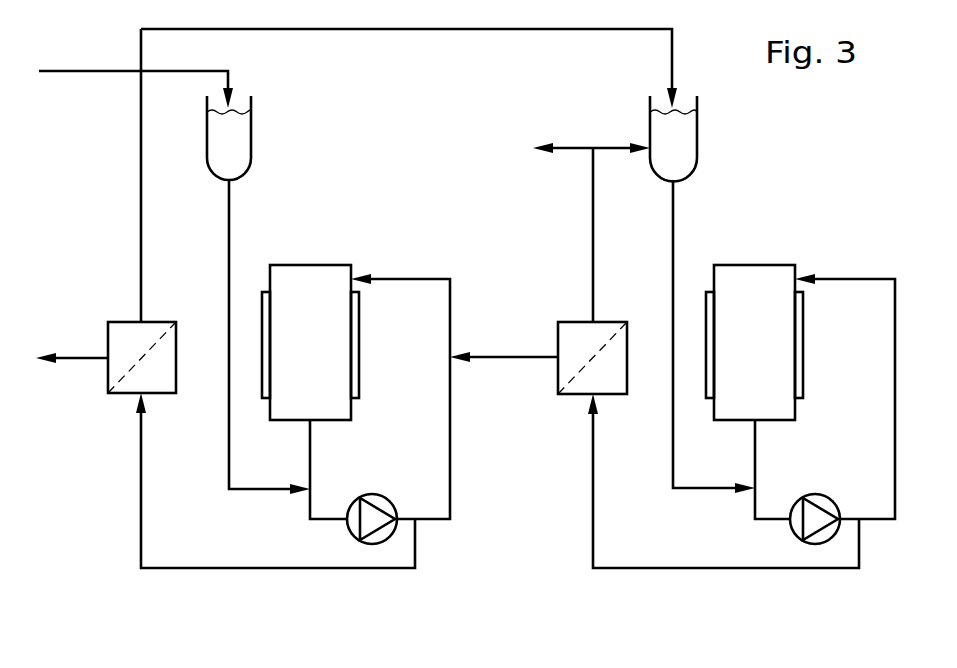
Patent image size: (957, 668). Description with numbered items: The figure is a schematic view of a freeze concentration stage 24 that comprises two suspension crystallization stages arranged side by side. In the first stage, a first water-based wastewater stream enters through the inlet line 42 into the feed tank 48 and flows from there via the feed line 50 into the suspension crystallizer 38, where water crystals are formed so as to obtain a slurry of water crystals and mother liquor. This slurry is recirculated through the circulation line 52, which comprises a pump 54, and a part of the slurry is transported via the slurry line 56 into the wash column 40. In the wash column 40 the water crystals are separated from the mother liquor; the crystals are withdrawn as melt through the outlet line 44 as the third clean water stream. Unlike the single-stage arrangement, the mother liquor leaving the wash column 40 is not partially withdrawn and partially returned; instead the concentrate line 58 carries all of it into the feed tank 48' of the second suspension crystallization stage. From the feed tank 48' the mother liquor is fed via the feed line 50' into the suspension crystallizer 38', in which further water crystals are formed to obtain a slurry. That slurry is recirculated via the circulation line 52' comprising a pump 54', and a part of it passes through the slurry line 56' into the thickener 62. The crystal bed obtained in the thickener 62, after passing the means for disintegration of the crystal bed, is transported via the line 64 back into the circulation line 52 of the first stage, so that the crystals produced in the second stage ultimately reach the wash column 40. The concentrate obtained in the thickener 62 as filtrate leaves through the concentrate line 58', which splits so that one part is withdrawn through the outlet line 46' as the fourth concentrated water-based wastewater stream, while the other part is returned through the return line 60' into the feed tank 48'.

The freeze concentration stage 24 is at (100, 547).
The suspension crystallizer 38 is at (310, 342).
The suspension crystallizer 38' is at (754, 342).
The wash column 40 is at (130, 342).
The inlet line 42 is at (70, 75).
The outlet line 44 is at (85, 360).
The outlet line 46' is at (561, 121).
The feed tank 48 is at (229, 138).
The feed tank 48' is at (673, 138).
The feed line 50 is at (240, 337).
The feed line 50' is at (722, 336).
The circulation line 52 is at (411, 396).
The circulation line 52' is at (825, 396).
The pump 54 is at (379, 494).
The pump 54' is at (829, 495).
The slurry line 56 is at (275, 519).
The slurry line 56' is at (723, 515).
The concentrate line 58 is at (95, 175).
The concentrate line 58' is at (561, 235).
The return line 60' is at (619, 121).
The thickener 62 is at (580, 338).
The line 64 is at (500, 355).